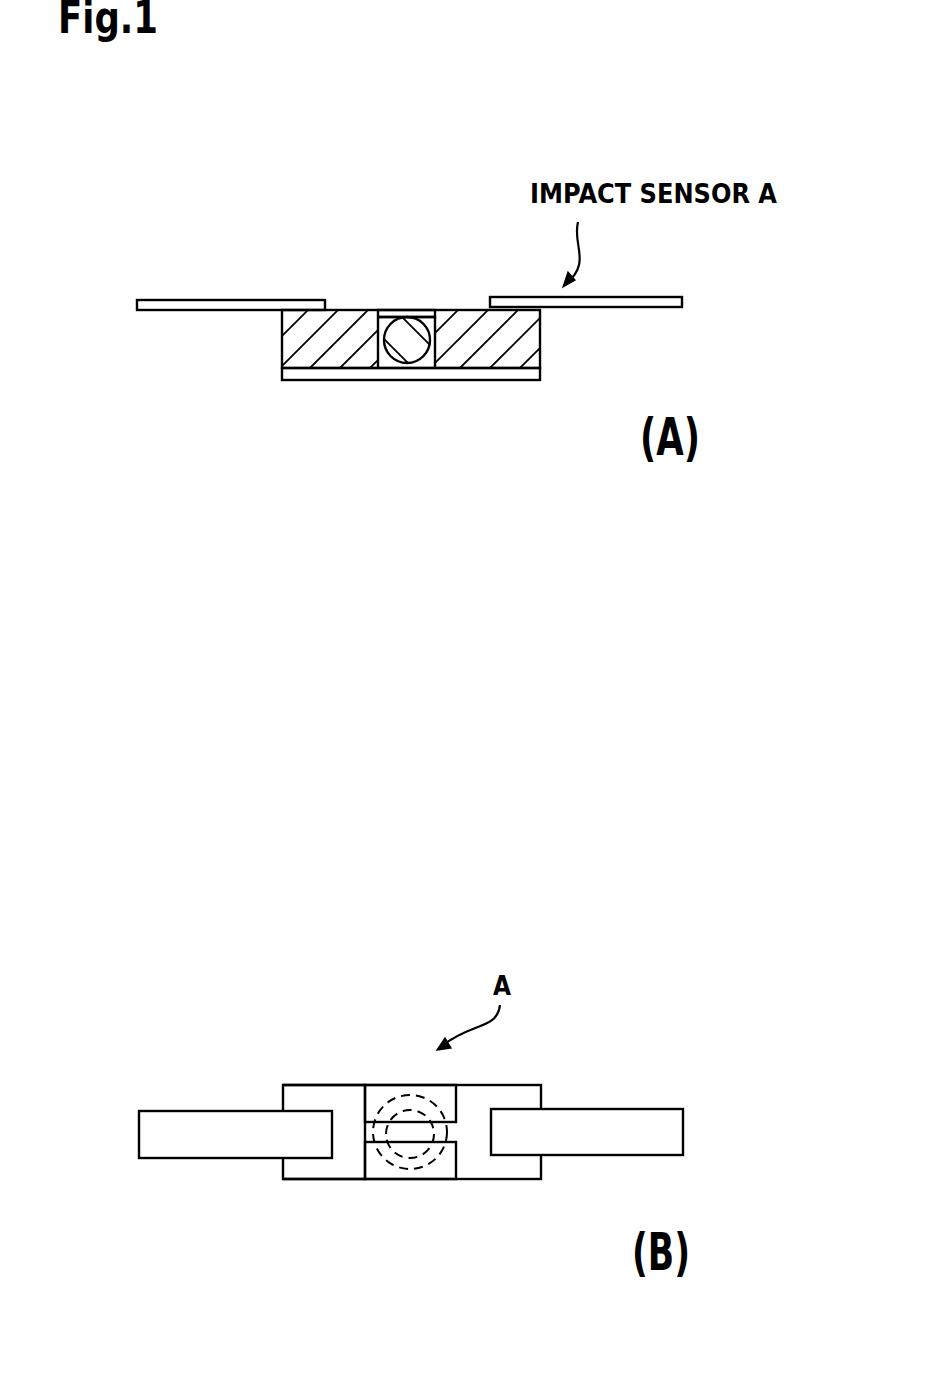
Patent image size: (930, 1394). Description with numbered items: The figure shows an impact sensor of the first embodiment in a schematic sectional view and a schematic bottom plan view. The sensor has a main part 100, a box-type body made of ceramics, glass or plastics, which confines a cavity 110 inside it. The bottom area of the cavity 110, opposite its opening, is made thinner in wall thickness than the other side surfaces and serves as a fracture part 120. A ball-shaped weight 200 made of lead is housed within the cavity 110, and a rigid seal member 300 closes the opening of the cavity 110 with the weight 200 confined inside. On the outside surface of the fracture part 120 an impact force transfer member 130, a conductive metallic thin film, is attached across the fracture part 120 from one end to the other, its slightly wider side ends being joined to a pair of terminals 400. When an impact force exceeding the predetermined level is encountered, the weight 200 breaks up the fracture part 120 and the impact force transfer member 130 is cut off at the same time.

The main part 100 is at (546, 348).
The cavity 110 is at (378, 368).
The fracture part 120 is at (405, 310).
The impact force transfer member 130 is at (331, 1095).
The weight 200 is at (413, 352).
The seal member 300 is at (300, 382).
The terminals 400 is at (167, 300).